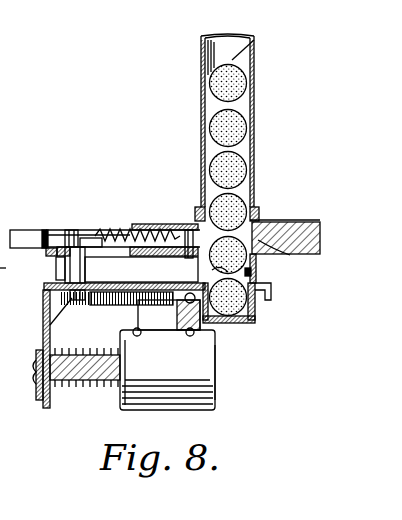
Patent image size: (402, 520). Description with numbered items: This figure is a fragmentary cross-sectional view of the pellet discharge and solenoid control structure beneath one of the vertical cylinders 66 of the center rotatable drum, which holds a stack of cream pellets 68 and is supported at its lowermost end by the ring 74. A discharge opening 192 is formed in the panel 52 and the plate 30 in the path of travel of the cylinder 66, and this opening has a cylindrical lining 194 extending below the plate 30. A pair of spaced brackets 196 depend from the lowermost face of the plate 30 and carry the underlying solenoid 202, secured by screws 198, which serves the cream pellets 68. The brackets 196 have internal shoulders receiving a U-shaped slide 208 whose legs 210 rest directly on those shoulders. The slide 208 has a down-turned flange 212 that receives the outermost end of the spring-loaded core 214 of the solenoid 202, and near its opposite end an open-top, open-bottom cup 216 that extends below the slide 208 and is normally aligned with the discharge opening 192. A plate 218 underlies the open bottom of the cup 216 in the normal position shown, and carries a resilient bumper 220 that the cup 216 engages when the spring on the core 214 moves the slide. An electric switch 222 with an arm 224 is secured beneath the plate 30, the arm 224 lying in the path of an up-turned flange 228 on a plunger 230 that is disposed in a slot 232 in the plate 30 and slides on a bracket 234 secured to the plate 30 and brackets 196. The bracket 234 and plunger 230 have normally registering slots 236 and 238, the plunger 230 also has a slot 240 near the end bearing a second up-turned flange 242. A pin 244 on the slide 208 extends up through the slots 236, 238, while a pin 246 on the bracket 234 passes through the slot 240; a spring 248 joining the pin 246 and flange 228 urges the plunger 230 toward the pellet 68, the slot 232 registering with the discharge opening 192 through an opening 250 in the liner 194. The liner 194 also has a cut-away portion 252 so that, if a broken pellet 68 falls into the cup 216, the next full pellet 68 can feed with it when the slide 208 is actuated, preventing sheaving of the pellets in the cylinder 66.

The plate 30 is at (285, 222).
The panel 52 is at (152, 222).
The vertical cylinder 66 is at (246, 92).
The cream pellet 68 is at (254, 52).
The ring 74 is at (258, 212).
The discharge opening 192 is at (215, 212).
The cylindrical lining 194 is at (282, 256).
The bracket 196 is at (140, 340).
The screw 198 is at (215, 352).
The solenoid 202 is at (180, 410).
The slide 208 is at (169, 311).
The leg 210 is at (130, 300).
The down-turned flange 212 is at (43, 323).
The spring-loaded core 214 is at (85, 386).
The cup 216 is at (258, 300).
The plate 218 is at (240, 322).
The resilient bumper 220 is at (190, 335).
The electric switch 222 is at (92, 238).
The arm 224 is at (68, 232).
The up-turned flange 228 is at (52, 230).
The plunger 230 is at (56, 258).
The slot 232 is at (30, 232).
The bracket 234 is at (56, 272).
The slot 236 is at (84, 268).
The slot 238 is at (104, 230).
The slot 240 is at (188, 230).
The second up-turned flange 242 is at (228, 255).
The pin 244 is at (71, 311).
The pin 246 is at (141, 269).
The spring 248 is at (135, 238).
The opening 250 is at (225, 263).
The cut-away portion 252 is at (252, 272).